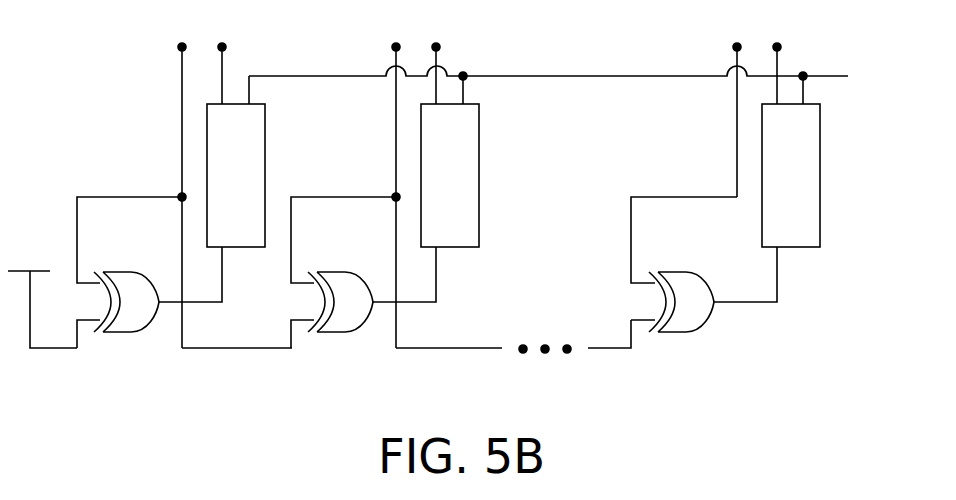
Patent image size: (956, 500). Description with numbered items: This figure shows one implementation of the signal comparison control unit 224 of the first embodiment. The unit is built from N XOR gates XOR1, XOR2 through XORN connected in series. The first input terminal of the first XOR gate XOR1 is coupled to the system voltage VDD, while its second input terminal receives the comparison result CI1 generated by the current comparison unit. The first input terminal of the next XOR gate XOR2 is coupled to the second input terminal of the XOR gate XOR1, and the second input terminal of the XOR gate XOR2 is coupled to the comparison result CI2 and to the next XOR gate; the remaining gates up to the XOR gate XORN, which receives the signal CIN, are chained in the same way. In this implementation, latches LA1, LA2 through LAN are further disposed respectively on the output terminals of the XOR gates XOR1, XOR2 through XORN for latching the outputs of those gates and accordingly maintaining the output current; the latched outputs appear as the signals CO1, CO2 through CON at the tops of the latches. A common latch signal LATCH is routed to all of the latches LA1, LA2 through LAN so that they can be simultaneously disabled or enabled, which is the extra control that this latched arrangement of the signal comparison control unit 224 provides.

The signal comparison control unit 224 is at (462, 203).
The latch LA1 is at (265, 159).
The latch LA2 is at (479, 159).
The latch LAN is at (820, 159).
The first XOR gate XOR1 is at (134, 272).
The XOR gate XOR2 is at (348, 272).
The XOR gate XORN is at (689, 272).
The comparison result CI1 is at (174, 179).
The first carry-out signal CO1 is at (228, 57).
The comparison result CI2 is at (391, 179).
The second carry-out signal CO2 is at (444, 57).
The Nth carry-in signal CIN is at (730, 103).
The Nth carry-out signal CON is at (783, 57).
The system voltage VDD is at (42, 293).
The latch signal LATCH is at (583, 77).